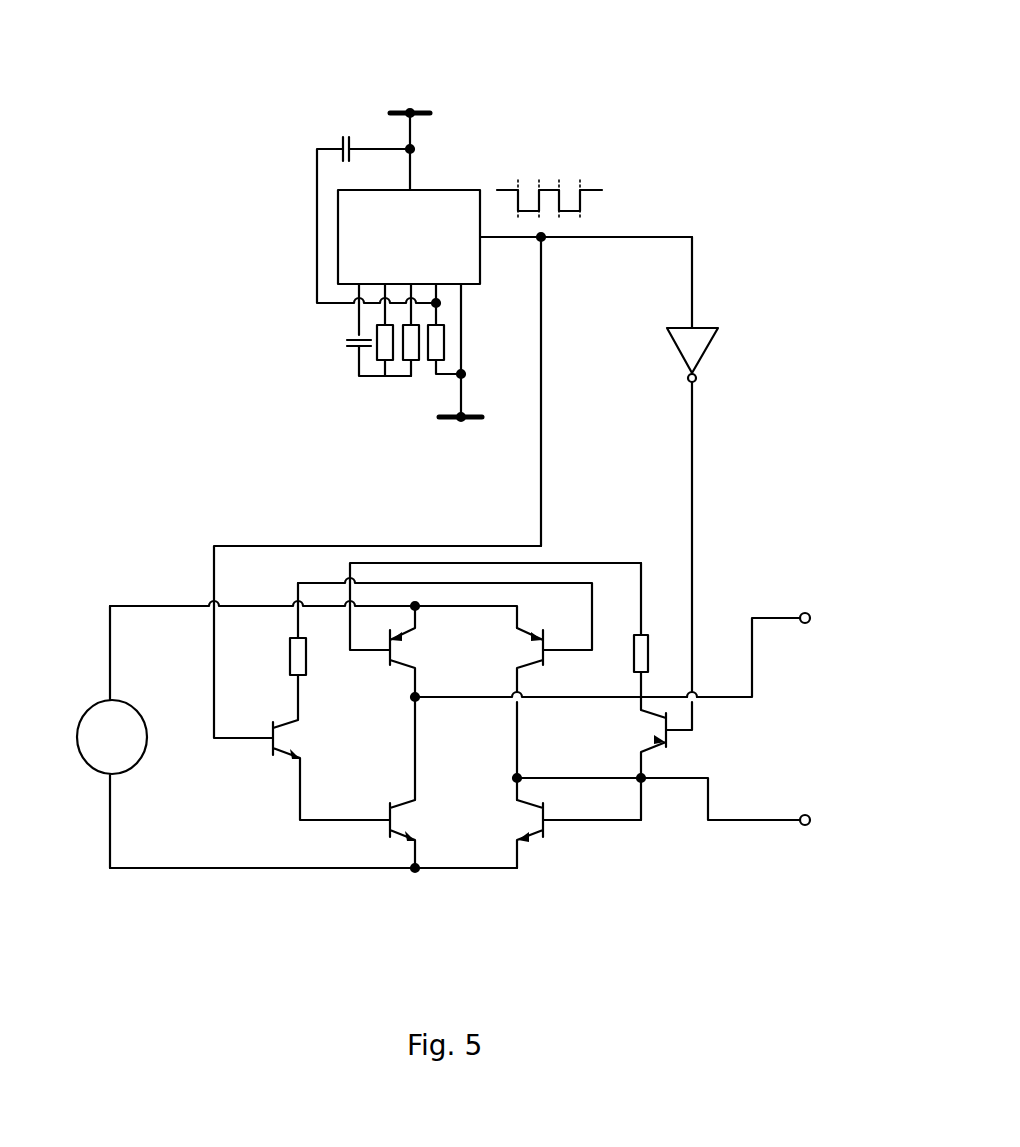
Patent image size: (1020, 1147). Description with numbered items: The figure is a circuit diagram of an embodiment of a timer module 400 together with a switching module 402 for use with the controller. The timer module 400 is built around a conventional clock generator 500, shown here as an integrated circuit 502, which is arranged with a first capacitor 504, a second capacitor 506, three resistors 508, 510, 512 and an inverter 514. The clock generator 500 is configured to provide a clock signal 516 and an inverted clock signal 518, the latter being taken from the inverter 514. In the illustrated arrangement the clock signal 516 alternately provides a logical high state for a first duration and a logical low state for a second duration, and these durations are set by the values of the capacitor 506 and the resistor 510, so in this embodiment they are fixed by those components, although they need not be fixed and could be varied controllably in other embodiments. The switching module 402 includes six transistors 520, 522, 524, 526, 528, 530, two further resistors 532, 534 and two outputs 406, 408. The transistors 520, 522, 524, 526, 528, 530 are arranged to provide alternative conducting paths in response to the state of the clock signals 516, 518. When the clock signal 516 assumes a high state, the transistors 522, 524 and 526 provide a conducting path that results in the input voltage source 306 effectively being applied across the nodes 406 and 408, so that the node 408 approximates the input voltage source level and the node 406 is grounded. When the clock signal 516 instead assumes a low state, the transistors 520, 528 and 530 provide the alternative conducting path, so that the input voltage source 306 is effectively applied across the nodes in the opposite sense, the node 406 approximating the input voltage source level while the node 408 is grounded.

The timer module 400 is at (538, 60).
The switching module 402 is at (458, 762).
The input voltage source 306 is at (100, 776).
The output 406 is at (807, 613).
The output 408 is at (807, 815).
The clock generator 500 is at (452, 268).
The integrated circuit 502 is at (440, 190).
The capacitor 504 is at (341, 145).
The capacitor 506 is at (352, 343).
The resistor 508 is at (445, 346).
The resistor 510 is at (382, 363).
The resistor 512 is at (416, 363).
The inverter 514 is at (677, 353).
The clock signal 516 is at (541, 415).
The inverted clock signal 518 is at (692, 415).
The transistor 520 is at (400, 666).
The transistor 522 is at (296, 750).
The transistor 524 is at (400, 802).
The transistor 526 is at (518, 640).
The transistor 528 is at (545, 835).
The transistor 530 is at (662, 745).
The resistor 532 is at (292, 655).
The resistor 534 is at (634, 660).